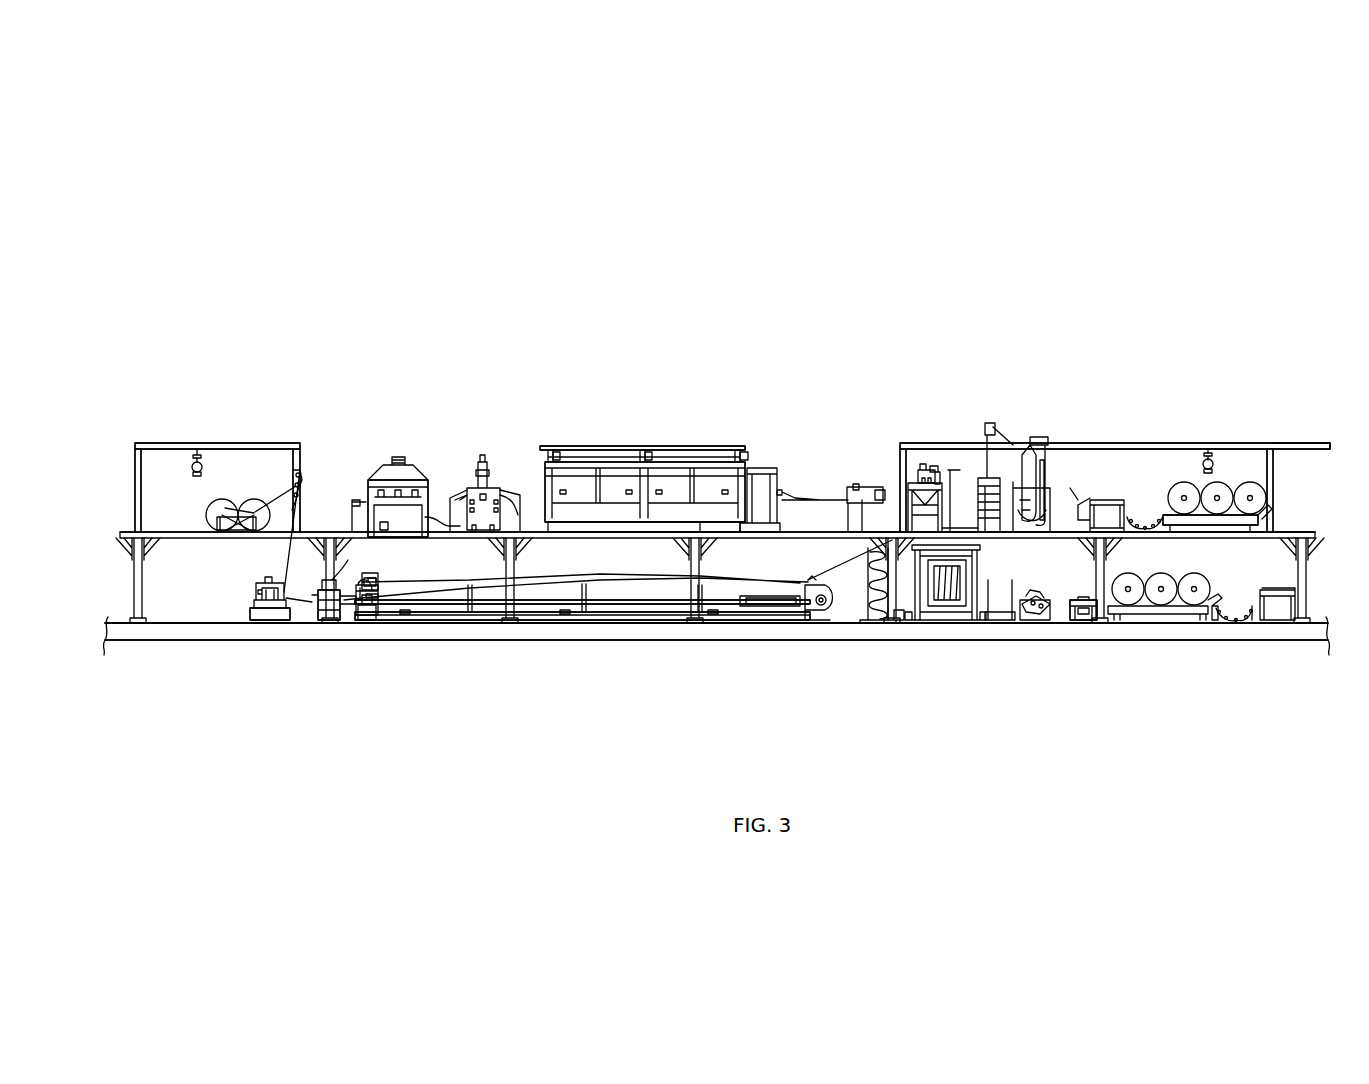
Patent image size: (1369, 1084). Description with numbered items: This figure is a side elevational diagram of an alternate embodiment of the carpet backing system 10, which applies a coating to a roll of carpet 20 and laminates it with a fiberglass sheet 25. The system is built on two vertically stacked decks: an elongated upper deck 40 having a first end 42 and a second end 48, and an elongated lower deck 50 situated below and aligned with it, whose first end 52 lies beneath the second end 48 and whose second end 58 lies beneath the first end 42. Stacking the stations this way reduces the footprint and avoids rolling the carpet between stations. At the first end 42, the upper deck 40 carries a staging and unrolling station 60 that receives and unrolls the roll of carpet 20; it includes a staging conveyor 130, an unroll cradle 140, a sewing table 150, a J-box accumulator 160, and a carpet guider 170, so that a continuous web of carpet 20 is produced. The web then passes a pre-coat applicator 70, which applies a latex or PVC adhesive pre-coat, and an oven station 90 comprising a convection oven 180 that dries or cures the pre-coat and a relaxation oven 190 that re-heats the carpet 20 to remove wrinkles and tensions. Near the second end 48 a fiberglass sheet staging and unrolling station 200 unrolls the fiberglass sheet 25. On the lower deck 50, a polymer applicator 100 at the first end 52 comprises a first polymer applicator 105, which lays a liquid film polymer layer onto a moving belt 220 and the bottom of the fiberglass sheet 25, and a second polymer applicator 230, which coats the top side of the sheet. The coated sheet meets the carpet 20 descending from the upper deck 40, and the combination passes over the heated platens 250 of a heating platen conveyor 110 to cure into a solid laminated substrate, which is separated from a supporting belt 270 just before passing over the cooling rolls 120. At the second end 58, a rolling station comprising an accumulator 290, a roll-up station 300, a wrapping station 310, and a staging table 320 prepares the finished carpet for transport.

The carpet backing system 10 is at (1022, 203).
The roll of carpet 20 is at (1258, 494).
The fiberglass sheet 25 is at (258, 513).
The upper deck 40 is at (110, 443).
The first end 42 is at (1241, 440).
The second end 48 is at (152, 470).
The lower deck 50 is at (110, 541).
The first end 52 is at (190, 625).
The second end 58 is at (1080, 598).
The staging and unrolling station 60 is at (1290, 320).
The pre-coat applicator 70 is at (906, 432).
The oven station 90 is at (830, 340).
The polymer applicator 100 is at (353, 640).
The first polymer applicator 105 is at (276, 582).
The heating platen conveyor 110 is at (830, 643).
The cooling rolls 120 is at (878, 625).
The staging conveyor 130 is at (1194, 452).
The unroll cradle 140 is at (1145, 478).
The sewing table 150 is at (1116, 484).
The J-box accumulator 160 is at (1038, 441).
The carpet guider 170 is at (968, 466).
The convection oven 180 is at (643, 440).
The relaxation oven 190 is at (397, 452).
The fiberglass sheet staging and unrolling station 200 is at (298, 410).
The moving belt 220 is at (322, 598).
The second polymer applicator 230 is at (338, 625).
The heated platens 250 is at (563, 577).
The supporting belt 270 is at (728, 580).
The accumulator 290 is at (948, 625).
The roll-up station 300 is at (1030, 625).
The wrapping station 310 is at (1085, 625).
The staging table 320 is at (1158, 625).